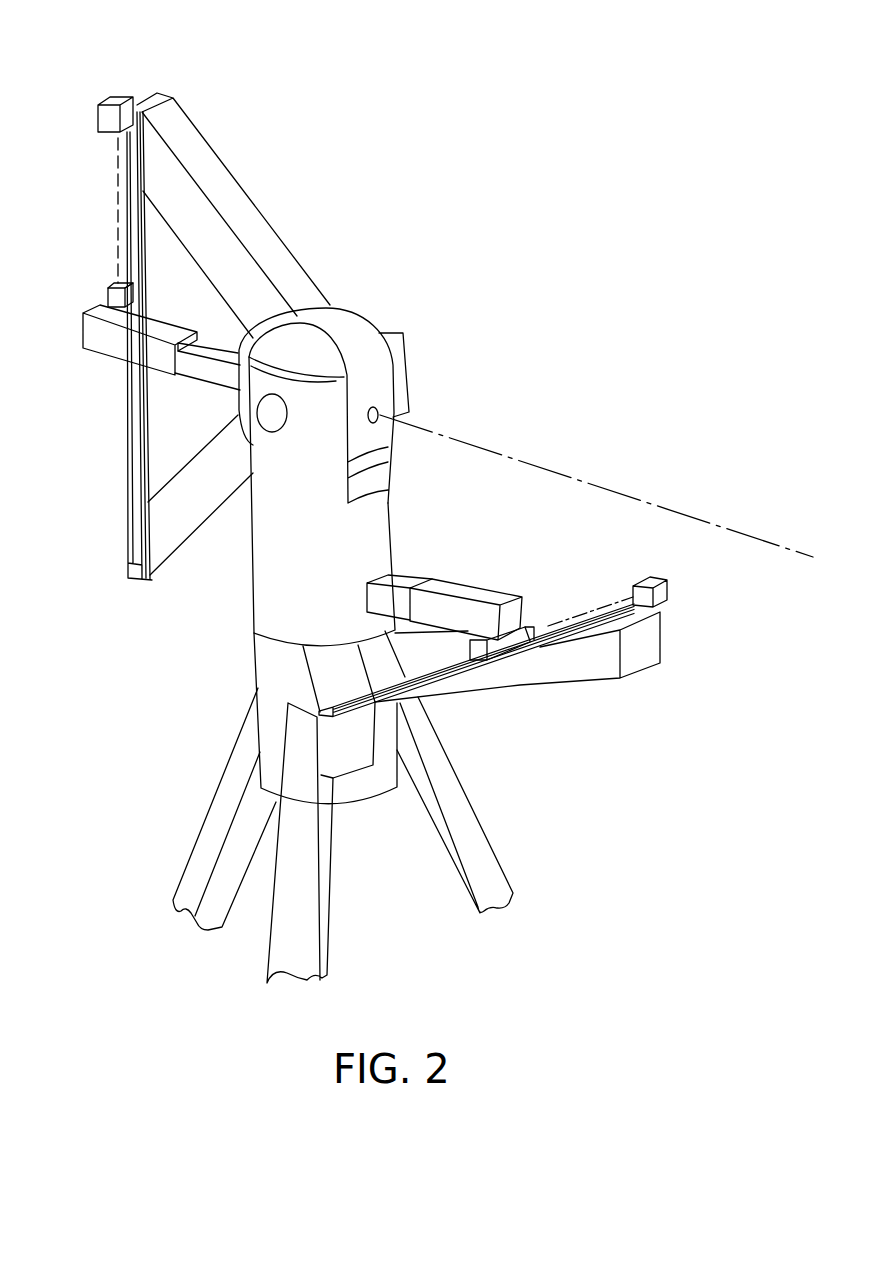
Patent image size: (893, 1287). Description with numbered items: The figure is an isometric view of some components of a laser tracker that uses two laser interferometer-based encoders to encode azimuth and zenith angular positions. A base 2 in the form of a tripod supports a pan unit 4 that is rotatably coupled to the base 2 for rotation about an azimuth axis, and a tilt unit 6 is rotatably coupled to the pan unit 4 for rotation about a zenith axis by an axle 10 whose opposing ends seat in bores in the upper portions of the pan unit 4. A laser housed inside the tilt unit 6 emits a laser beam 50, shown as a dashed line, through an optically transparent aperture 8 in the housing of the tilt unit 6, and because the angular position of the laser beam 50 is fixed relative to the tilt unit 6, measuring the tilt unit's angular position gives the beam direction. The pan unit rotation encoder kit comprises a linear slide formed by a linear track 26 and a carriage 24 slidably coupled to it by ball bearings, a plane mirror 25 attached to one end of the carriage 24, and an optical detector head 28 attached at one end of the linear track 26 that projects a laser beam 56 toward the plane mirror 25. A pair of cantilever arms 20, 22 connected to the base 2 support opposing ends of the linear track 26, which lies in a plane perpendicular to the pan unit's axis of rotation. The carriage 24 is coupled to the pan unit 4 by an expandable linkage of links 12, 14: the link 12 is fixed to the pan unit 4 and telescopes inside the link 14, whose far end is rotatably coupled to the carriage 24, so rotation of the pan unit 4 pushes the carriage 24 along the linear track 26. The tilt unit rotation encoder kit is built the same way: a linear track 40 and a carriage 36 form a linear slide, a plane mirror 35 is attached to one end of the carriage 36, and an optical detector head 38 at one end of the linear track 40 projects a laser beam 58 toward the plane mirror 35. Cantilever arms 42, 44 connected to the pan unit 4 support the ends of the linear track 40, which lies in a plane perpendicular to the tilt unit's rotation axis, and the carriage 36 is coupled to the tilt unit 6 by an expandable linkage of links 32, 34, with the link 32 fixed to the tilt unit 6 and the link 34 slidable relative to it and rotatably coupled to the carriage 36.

The base 2 is at (321, 892).
The pan unit 4 is at (254, 600).
The tilt unit 6 is at (347, 330).
The aperture 8 is at (377, 411).
The axle 10 is at (268, 413).
The link 12 is at (400, 585).
The link 14 is at (478, 595).
The cantilever arm 20 is at (325, 667).
The cantilever arm 22 is at (593, 672).
The carriage 24 is at (505, 650).
The plane mirror 25 is at (545, 652).
The linear track 26 is at (418, 698).
The optical detector head 28 is at (660, 592).
The link 32 is at (215, 352).
The link 34 is at (92, 347).
The plane mirror 35 is at (117, 282).
The carriage 36 is at (108, 294).
The optical detector head 38 is at (97, 113).
The linear track 40 is at (127, 412).
The cantilever arm 42 is at (256, 212).
The cantilever arm 44 is at (172, 545).
The laser beam 50 is at (545, 463).
The laser beam 56 is at (614, 605).
The laser beam 58 is at (118, 200).